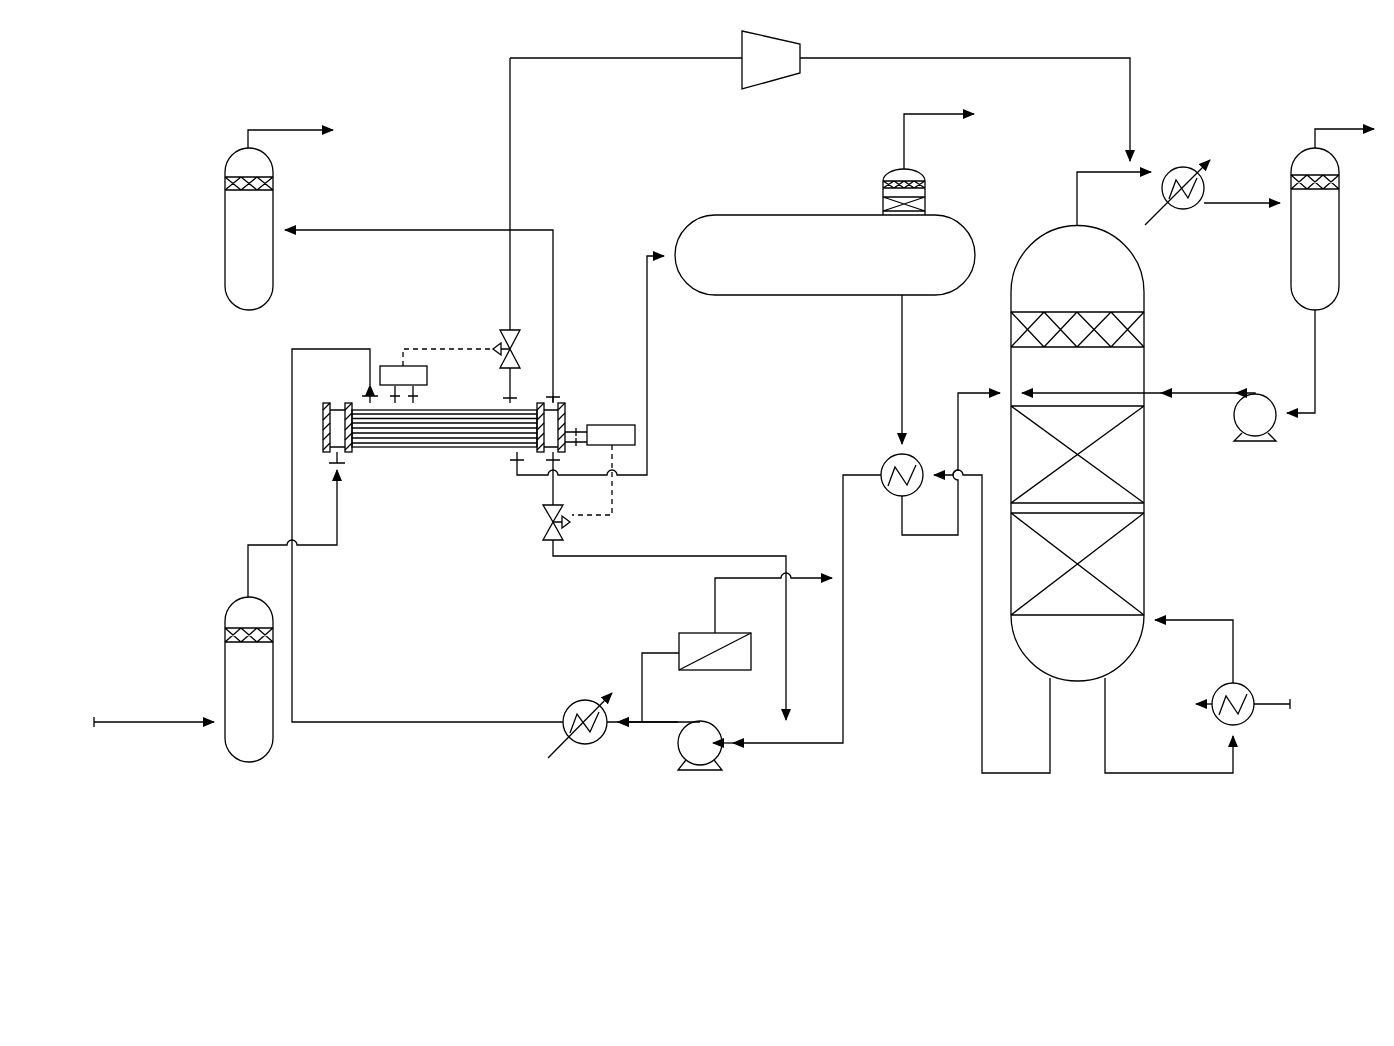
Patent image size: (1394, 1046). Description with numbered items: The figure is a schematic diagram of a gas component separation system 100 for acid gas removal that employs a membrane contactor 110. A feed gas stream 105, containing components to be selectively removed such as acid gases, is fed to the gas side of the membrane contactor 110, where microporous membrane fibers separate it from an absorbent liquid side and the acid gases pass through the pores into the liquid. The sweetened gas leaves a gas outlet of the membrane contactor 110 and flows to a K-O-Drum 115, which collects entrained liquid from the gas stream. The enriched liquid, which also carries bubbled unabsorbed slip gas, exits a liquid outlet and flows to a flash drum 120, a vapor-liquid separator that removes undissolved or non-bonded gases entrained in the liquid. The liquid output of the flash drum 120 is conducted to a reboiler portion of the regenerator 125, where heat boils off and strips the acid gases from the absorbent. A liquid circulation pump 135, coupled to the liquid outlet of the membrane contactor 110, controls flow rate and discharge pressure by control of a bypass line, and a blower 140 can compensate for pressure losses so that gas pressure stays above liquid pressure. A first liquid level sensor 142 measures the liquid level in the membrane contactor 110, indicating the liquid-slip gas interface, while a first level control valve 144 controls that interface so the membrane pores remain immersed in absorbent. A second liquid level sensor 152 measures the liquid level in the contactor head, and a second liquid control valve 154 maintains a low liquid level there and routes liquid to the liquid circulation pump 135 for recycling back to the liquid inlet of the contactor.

The system 100 is at (176, 112).
The feed gas stream 105 is at (222, 665).
The membrane contactor 110 is at (323, 430).
The K-O-Drum 115 is at (222, 220).
The flash drum 120 is at (848, 295).
The regenerator 125 is at (1147, 540).
The liquid circulation pump 135 is at (710, 773).
The blower 140 is at (742, 55).
The first liquid level sensor 142 is at (392, 363).
The first level control valve 144 is at (520, 340).
The second liquid level sensor 152 is at (598, 411).
The second liquid control valve 154 is at (572, 521).